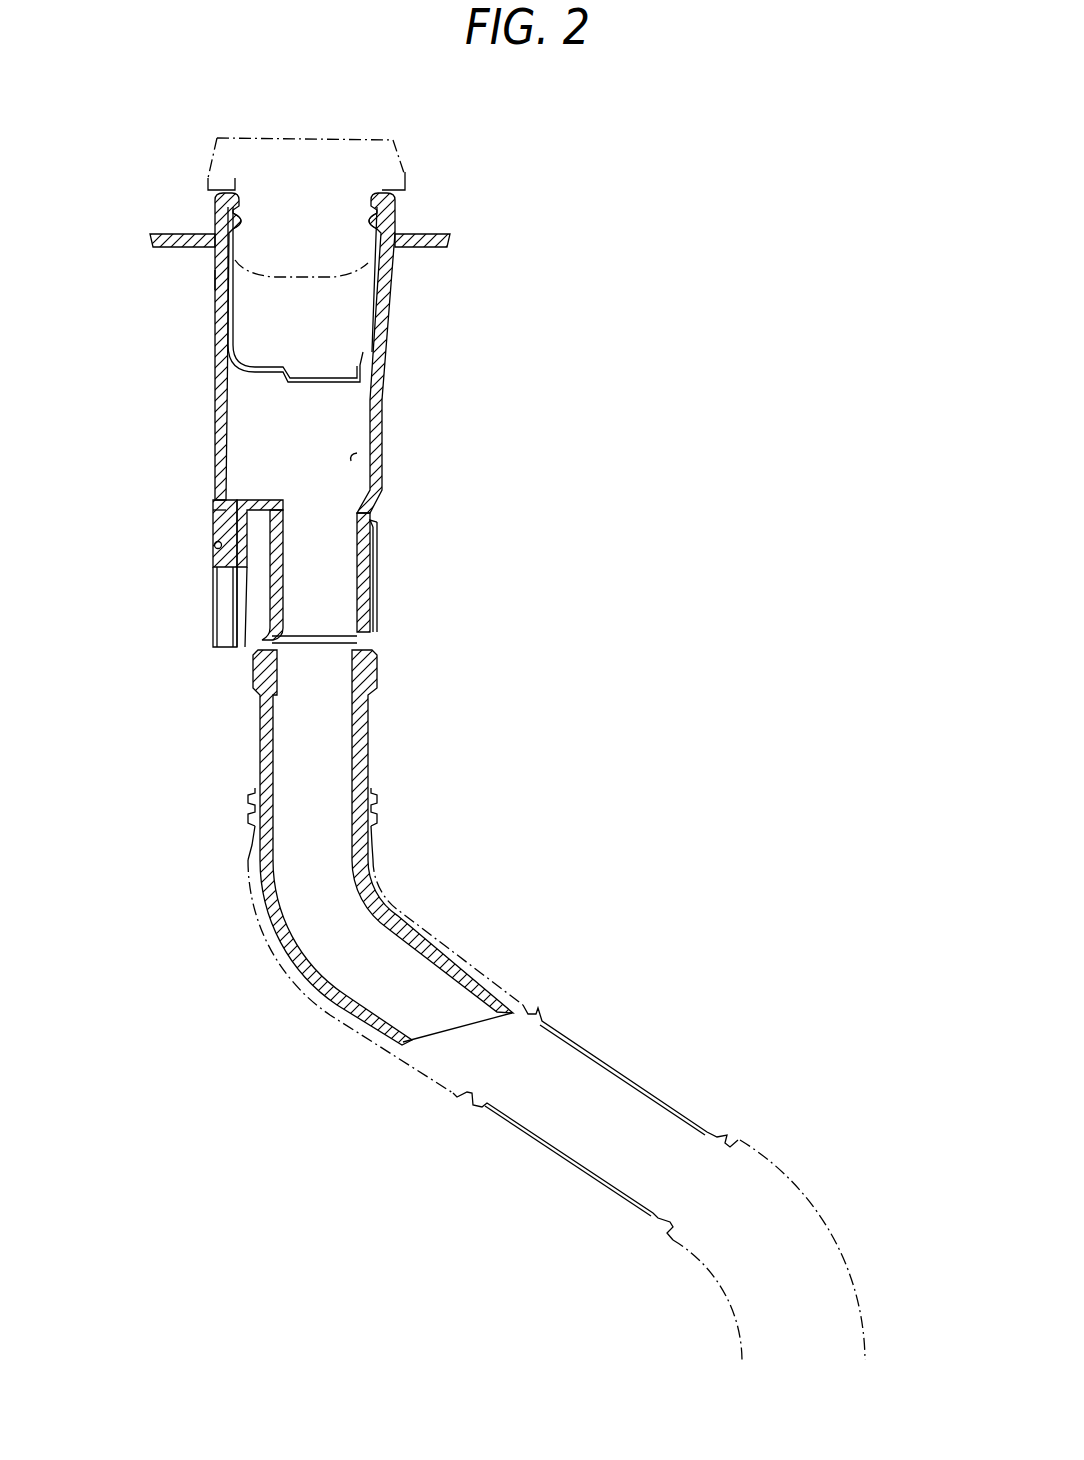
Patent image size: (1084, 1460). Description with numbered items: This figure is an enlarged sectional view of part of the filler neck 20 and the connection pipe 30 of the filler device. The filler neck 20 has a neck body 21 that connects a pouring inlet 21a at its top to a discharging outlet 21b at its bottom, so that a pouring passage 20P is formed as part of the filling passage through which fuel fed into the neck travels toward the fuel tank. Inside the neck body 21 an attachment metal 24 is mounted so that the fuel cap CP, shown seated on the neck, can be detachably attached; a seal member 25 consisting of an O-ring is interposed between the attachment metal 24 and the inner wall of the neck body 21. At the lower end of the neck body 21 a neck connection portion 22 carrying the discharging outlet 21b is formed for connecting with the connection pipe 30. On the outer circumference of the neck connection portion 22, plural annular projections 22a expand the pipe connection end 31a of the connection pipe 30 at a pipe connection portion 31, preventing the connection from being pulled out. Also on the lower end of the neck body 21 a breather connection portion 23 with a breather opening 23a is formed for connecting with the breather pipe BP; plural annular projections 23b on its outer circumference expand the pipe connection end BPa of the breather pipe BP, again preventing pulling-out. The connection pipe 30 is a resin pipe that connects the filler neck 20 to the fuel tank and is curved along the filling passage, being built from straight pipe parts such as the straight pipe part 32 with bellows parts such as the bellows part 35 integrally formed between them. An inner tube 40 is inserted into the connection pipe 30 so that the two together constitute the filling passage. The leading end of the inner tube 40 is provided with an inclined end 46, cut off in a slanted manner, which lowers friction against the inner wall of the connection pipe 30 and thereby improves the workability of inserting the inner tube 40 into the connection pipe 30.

The fuel cap CP is at (410, 183).
The filler neck 20 is at (335, 420).
The pouring passage 20P is at (357, 453).
The neck body 21 is at (380, 424).
The pouring inlet 21a is at (352, 248).
The discharging outlet 21b is at (345, 627).
The neck connection portion 22 is at (373, 550).
The annular projections 22a is at (373, 527).
The breather connection portion 23 is at (212, 528).
The breather opening 23a is at (230, 548).
The annular projections 23b is at (212, 513).
The attachment metal 24 is at (233, 330).
The seal member 25 is at (213, 280).
The connection pipe 30 is at (556, 941).
The pipe connection portion 31 is at (370, 742).
The pipe connection end 31a is at (373, 583).
The straight pipe part 32 is at (637, 1083).
The bellows part 35 is at (372, 822).
The inner tube 40 is at (267, 747).
The inclined end 46 is at (460, 1030).
The breather pipe BP is at (213, 631).
The pipe connection end BPa is at (215, 562).